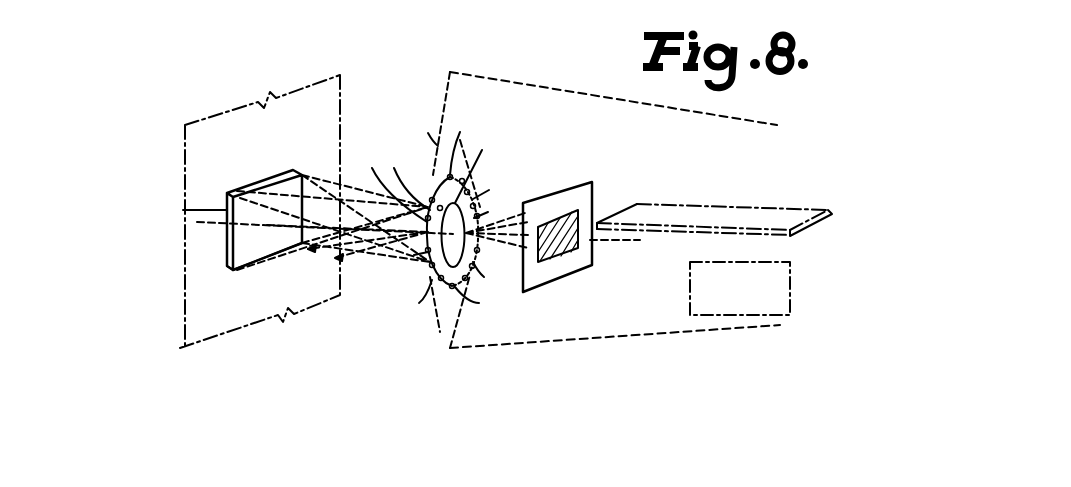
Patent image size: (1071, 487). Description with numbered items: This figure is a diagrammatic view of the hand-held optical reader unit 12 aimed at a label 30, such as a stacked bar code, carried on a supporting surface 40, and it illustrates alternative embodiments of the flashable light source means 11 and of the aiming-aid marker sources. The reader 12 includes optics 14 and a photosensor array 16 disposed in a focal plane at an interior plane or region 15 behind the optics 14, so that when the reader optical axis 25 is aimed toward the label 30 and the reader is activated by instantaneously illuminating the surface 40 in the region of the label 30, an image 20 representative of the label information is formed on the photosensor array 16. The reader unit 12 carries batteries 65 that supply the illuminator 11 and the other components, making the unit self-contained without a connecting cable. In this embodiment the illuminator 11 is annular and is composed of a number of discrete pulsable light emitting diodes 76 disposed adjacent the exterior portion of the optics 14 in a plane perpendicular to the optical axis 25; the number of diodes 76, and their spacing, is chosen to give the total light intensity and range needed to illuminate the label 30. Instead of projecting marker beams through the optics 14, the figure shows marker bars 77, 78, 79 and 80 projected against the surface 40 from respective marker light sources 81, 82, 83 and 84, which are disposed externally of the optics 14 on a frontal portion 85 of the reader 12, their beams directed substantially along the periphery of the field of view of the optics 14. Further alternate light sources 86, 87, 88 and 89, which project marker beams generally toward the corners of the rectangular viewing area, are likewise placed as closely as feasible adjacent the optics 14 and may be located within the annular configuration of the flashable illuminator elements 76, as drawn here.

The flashable light source means 11 is at (402, 180).
The hand-held optical reader unit 12 is at (668, 340).
The optics 14 is at (467, 200).
The interior plane or region 15 is at (577, 318).
The photosensor array 16 is at (576, 184).
The image 20 is at (582, 218).
The reader optical axis 25 is at (197, 222).
The label 30 is at (229, 263).
The supporting surface 40 is at (243, 318).
The batteries 65 is at (790, 297).
The light emitting diodes 76 is at (440, 176).
The bar 77 is at (242, 188).
The bar 78 is at (303, 197).
The bar 79 is at (274, 258).
The bar 80 is at (189, 204).
The marker light source 81 is at (462, 144).
The marker light source 82 is at (491, 211).
The marker light source 83 is at (478, 300).
The marker light source 84 is at (410, 254).
The frontal portion 85 is at (421, 132).
The alternate light source 86 is at (390, 185).
The alternate light source 87 is at (492, 189).
The alternate light source 88 is at (490, 275).
The alternate light source 89 is at (414, 299).